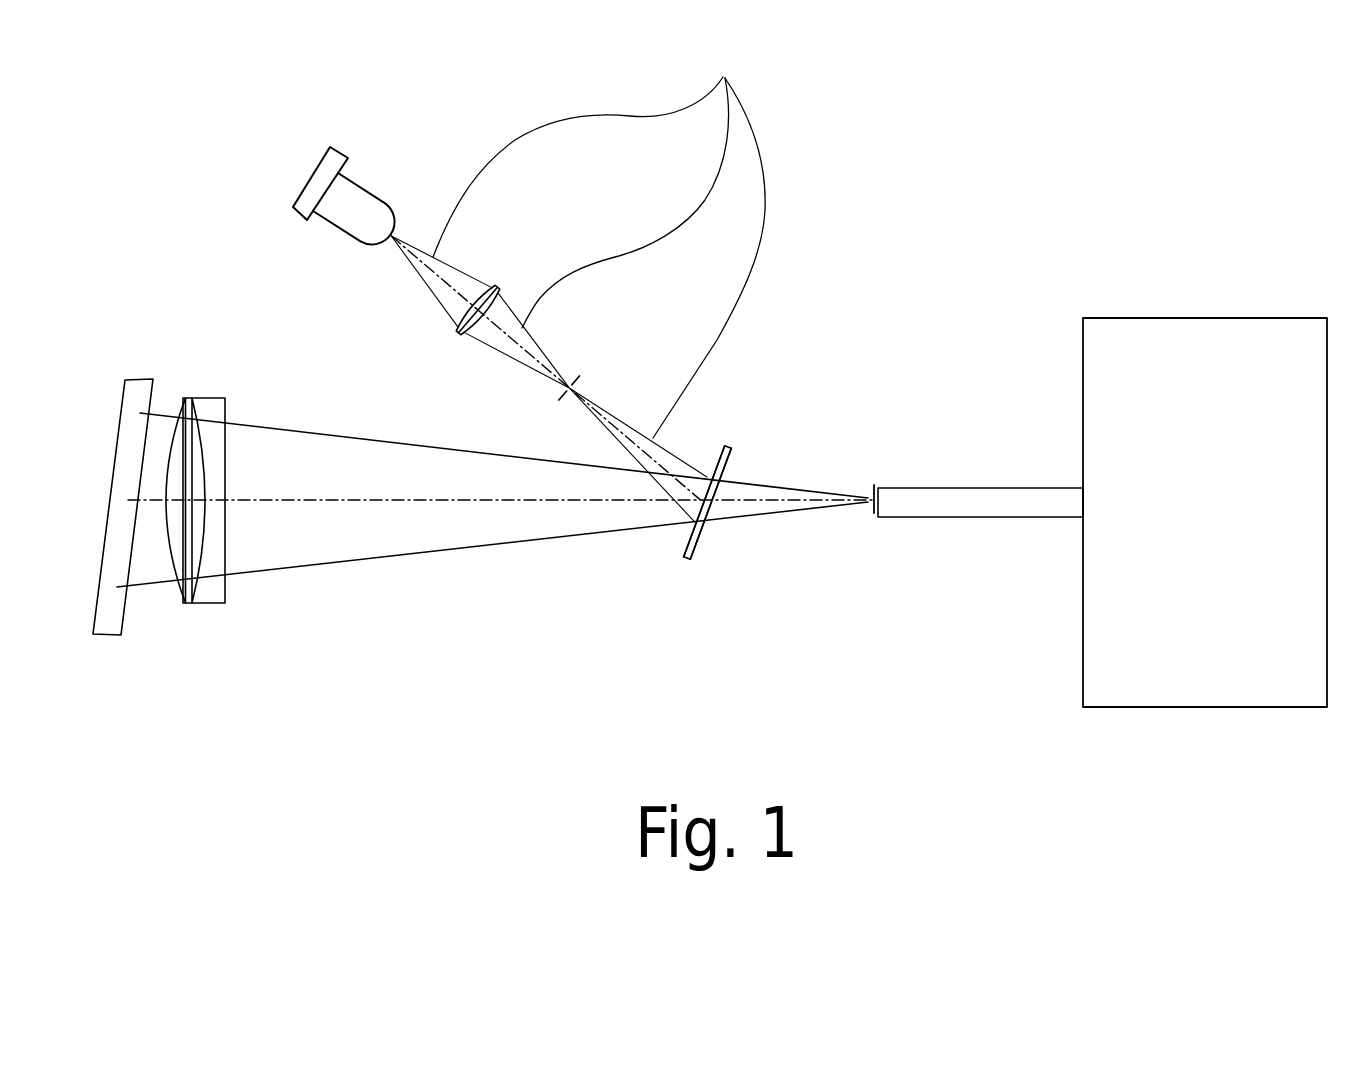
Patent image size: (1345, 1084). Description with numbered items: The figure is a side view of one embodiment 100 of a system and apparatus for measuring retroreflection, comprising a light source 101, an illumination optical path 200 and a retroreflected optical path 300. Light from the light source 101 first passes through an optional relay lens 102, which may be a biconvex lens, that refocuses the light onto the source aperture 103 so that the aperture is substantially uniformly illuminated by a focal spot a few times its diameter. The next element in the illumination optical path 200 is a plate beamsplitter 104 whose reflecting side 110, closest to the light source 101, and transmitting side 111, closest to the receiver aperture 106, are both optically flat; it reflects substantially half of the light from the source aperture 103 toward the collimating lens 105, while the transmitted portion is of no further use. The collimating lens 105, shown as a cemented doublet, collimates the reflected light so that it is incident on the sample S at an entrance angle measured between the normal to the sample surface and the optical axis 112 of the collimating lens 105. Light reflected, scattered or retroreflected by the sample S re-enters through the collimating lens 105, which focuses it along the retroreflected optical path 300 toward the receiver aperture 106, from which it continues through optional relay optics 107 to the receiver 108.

The embodiment 100 is at (1022, 160).
The light source 101 is at (365, 172).
The relay lens 102 is at (503, 280).
The source aperture 103 is at (583, 372).
The beamsplitter 104 is at (728, 440).
The collimating lens 105 is at (203, 613).
The receiver aperture 106 is at (873, 520).
The relay optics 107 is at (945, 480).
The receiver 108 is at (1205, 512).
The reflecting side 110 is at (680, 545).
The transmitting side 111 is at (700, 542).
The optical axis 112 is at (348, 500).
The illumination optical path 200 is at (783, 298).
The retroreflected optical path 300 is at (475, 573).
The sample S is at (130, 377).